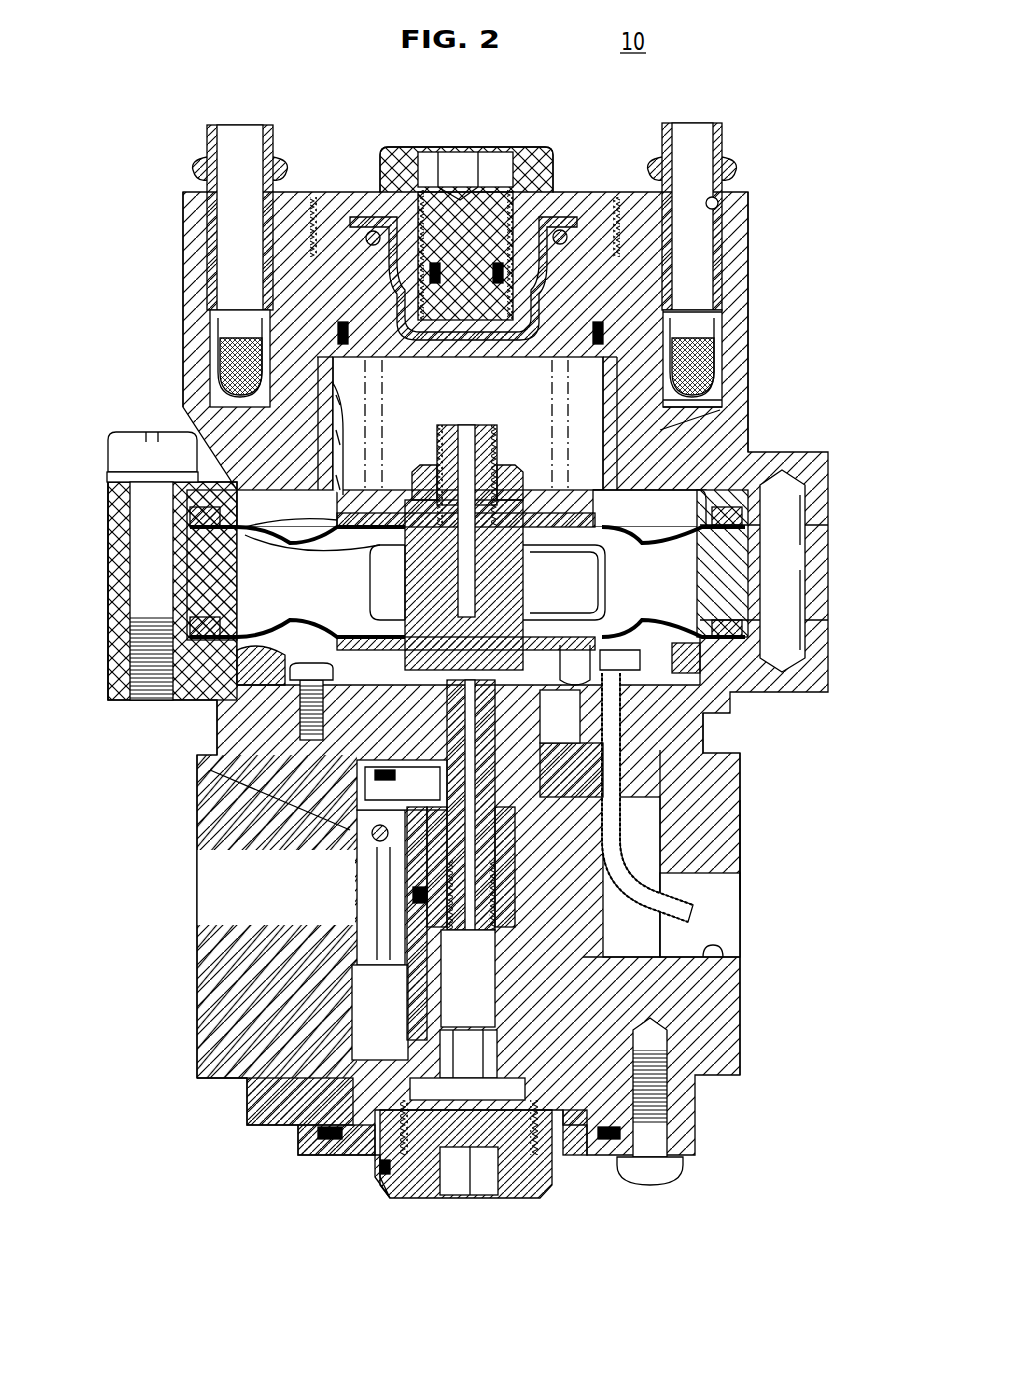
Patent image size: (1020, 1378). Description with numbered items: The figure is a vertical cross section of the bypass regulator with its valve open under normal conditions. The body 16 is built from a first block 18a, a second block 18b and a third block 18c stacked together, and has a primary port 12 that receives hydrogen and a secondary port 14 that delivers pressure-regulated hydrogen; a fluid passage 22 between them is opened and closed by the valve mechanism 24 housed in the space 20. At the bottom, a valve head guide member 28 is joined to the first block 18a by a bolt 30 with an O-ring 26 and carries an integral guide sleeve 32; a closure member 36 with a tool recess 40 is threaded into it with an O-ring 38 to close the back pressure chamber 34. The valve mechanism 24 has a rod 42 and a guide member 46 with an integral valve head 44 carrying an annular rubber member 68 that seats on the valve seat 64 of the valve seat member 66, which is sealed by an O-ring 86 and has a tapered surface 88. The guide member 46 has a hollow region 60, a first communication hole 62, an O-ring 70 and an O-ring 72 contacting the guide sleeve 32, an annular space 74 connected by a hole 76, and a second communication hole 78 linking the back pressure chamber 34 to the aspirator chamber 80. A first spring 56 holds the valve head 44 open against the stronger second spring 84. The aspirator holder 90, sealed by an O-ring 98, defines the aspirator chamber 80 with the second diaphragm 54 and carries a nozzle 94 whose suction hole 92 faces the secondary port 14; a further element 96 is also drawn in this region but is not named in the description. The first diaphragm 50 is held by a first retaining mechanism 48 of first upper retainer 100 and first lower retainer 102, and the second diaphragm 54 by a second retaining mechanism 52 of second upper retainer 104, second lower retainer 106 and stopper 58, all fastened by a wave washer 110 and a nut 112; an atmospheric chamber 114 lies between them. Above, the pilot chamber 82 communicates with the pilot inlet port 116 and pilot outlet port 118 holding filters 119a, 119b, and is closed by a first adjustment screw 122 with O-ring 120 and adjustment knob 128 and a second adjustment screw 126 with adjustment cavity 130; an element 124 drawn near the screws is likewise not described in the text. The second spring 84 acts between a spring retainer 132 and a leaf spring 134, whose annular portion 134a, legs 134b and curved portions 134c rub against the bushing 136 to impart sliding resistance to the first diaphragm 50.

The primary port 12 is at (250, 940).
The secondary port 14 is at (700, 950).
The body 16 is at (745, 842).
The first block 18a is at (220, 1080).
The second block 18b is at (113, 588).
The third block 18c is at (195, 317).
The space 20 is at (300, 880).
The fluid passage 22 is at (700, 732).
The valve mechanism 24 is at (540, 935).
The O-ring 26 is at (330, 1140).
The valve head guide member 28 is at (605, 1140).
The bolt 30 is at (650, 1178).
The guide sleeve 32 is at (450, 960).
The back pressure chamber 34 is at (573, 1130).
The closure member 36 is at (432, 1185).
The O-ring 38 is at (382, 1170).
The recess 40 is at (490, 1170).
The rod 42 is at (520, 610).
The valve head 44 is at (410, 850).
The guide member 46 is at (425, 893).
The first retaining mechanism 48 is at (600, 510).
The first diaphragm 50 is at (740, 445).
The second retaining mechanism 52 is at (395, 615).
The second diaphragm 54 is at (665, 620).
The first spring 56 is at (290, 1130).
The stopper 58 is at (590, 660).
The hollow region 60 is at (380, 990).
The first communication hole 62 is at (380, 790).
The valve seat 64 is at (375, 840).
The valve seat member 66 is at (680, 800).
The annular rubber member 68 is at (640, 845).
The O-ring 70 is at (440, 930).
The O-ring 72 is at (330, 1095).
The annular space 74 is at (520, 995).
The hole 76 is at (520, 955).
The second communication hole 78 is at (700, 715).
The aspirator chamber 80 is at (190, 672).
The pilot chamber 82 is at (468, 423).
The second spring 84 is at (650, 230).
The O-ring 86 is at (395, 800).
The tapered surface 88 is at (620, 770).
The aspirator holder 90 is at (255, 712).
The suction hole 92 is at (700, 908).
The nozzle 94 is at (660, 880).
The passage 96 is at (620, 745).
The O-ring 98 is at (310, 700).
The first upper retainer 100 is at (150, 455).
The first lower retainer 102 is at (600, 575).
The second upper retainer 104 is at (310, 605).
The second lower retainer 106 is at (118, 655).
The wave washer 110 is at (500, 475).
The nut 112 is at (480, 470).
The atmospheric chamber 114 is at (118, 583).
The pilot inlet port 116 is at (700, 215).
The pilot outlet port 118 is at (213, 222).
The filter 119a is at (695, 370).
The filter 119b is at (240, 362).
The O-ring 120 is at (700, 330).
The first adjustment screw 122 is at (312, 225).
The seal 124 is at (427, 270).
The second adjustment screw 126 is at (485, 210).
The adjustment knob 128 is at (380, 165).
The adjustment cavity 130 is at (475, 170).
The spring retainer 132 is at (540, 290).
The leaf spring 134 is at (338, 412).
The annular portion 134a is at (345, 490).
The legs 134b is at (343, 440).
The curved portions 134c is at (340, 400).
The bushing 136 is at (690, 415).